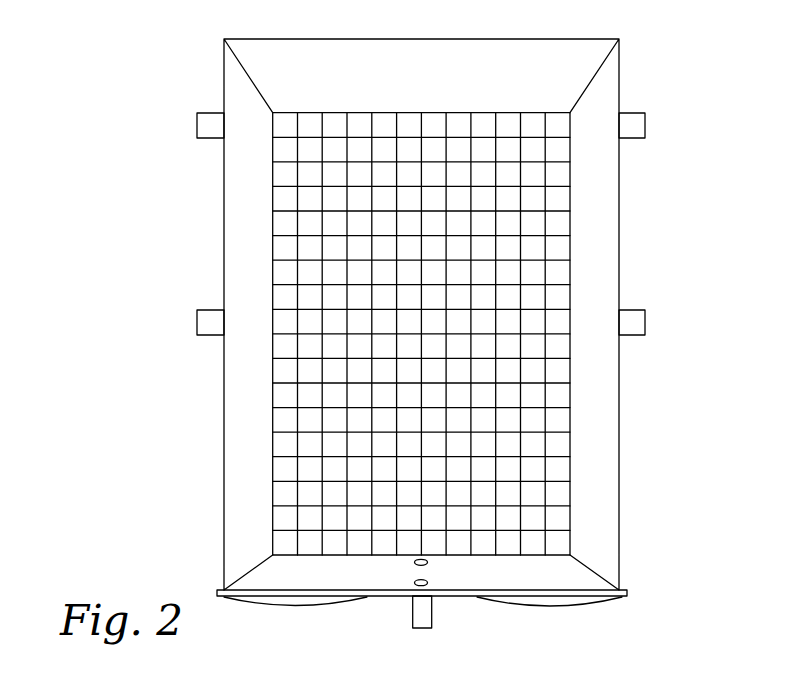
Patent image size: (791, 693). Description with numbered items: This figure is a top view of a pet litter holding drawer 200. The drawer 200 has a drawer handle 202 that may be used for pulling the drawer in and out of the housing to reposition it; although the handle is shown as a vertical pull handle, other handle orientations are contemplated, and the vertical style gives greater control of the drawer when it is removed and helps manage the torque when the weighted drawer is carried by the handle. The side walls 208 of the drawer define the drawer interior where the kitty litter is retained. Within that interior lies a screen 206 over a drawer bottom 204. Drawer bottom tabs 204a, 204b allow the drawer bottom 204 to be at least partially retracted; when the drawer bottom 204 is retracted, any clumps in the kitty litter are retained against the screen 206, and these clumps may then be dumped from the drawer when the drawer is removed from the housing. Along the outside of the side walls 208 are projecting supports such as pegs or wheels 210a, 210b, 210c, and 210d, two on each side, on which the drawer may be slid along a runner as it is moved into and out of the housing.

The drawer 200 is at (460, 597).
The drawer handle 202 is at (420, 628).
The drawer bottom 204 is at (288, 494).
The drawer bottom tab 204a is at (562, 606).
The drawer bottom tab 204b is at (277, 605).
The screen 206 is at (542, 432).
The side walls 208 is at (611, 236).
The wheel 210a is at (197, 125).
The wheel 210b is at (197, 325).
The wheel 210c is at (646, 128).
The wheel 210d is at (646, 323).